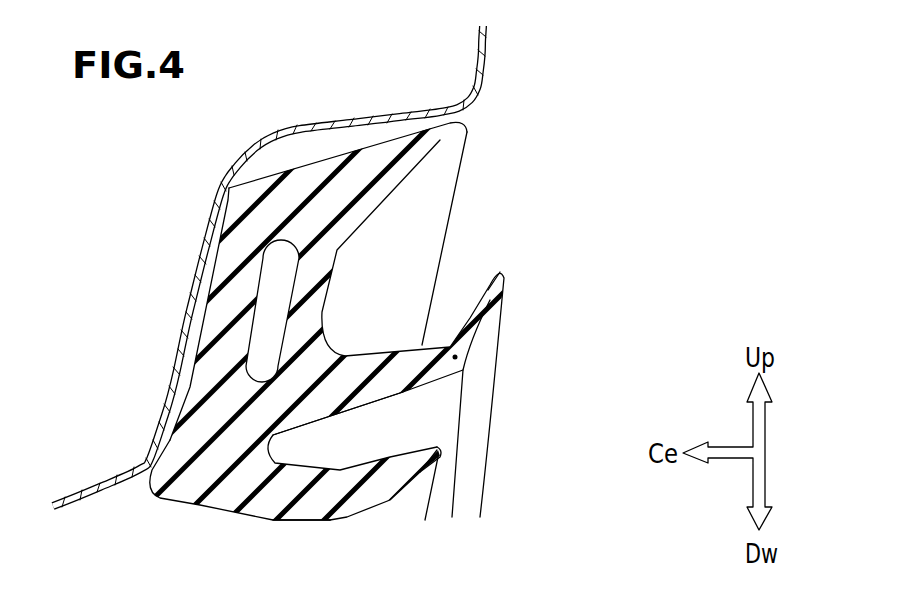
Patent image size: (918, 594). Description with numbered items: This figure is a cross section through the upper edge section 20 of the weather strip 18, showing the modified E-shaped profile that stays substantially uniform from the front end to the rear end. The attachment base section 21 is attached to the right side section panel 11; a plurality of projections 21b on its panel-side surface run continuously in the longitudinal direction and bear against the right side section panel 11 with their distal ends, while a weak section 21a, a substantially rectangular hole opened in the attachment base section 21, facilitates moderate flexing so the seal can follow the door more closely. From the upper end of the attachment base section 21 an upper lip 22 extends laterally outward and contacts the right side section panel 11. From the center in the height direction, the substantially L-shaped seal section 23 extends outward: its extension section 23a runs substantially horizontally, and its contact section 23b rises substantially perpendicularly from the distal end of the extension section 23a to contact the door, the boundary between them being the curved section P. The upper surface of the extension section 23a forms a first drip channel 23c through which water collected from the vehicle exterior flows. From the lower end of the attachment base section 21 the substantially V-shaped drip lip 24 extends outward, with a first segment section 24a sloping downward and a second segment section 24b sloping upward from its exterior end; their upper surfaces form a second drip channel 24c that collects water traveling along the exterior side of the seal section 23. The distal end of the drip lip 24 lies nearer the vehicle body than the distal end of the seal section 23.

The right side section panel 11 is at (507, 45).
The weather strip 18 is at (269, 261).
The upper edge section 20 is at (287, 161).
The attachment base section 21 is at (227, 248).
The weak section 21a is at (250, 345).
The projections 21b is at (226, 212).
The upper lip 22 is at (377, 305).
The seal section 23 is at (599, 283).
The extension section 23a is at (420, 387).
The contact section 23b is at (490, 322).
The first drip channel 23c is at (390, 348).
The drip lip 24 is at (584, 470).
The first segment section 24a is at (305, 523).
The second segment section 24b is at (418, 477).
The second drip channel 24c is at (367, 464).
The curved section P is at (455, 357).